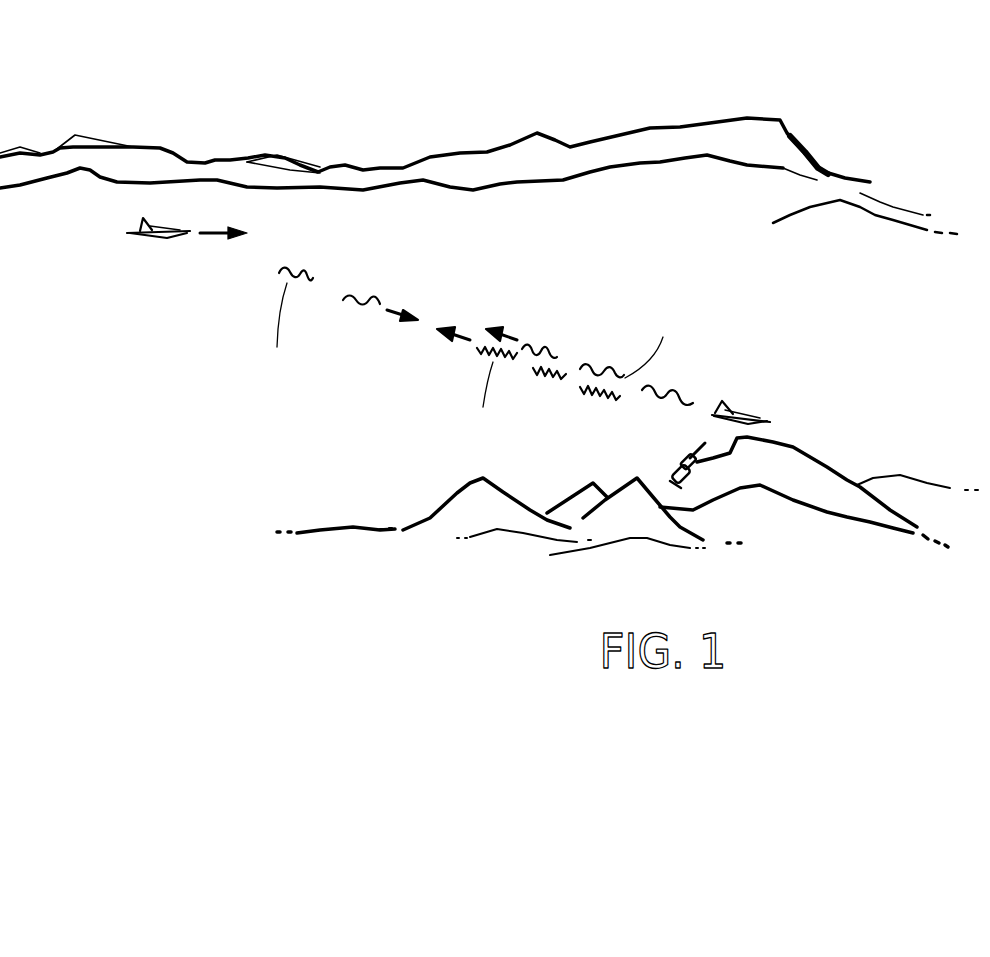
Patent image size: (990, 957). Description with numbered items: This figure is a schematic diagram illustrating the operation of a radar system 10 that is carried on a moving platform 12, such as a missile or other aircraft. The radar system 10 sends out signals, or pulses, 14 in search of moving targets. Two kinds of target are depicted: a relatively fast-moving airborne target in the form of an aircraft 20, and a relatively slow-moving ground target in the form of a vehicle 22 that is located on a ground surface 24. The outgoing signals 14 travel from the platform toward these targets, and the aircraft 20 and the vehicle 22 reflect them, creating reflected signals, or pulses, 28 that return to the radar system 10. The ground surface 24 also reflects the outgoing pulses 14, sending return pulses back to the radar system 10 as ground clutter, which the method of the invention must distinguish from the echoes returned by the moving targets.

The radar system 10 is at (147, 238).
The moving platform 12 is at (186, 232).
The signals (pulses) 14 is at (307, 268).
The aircraft 20 is at (767, 423).
The vehicle 22 is at (680, 487).
The ground surface 24 is at (517, 576).
The reflected signals (pulses) 28 is at (547, 357).